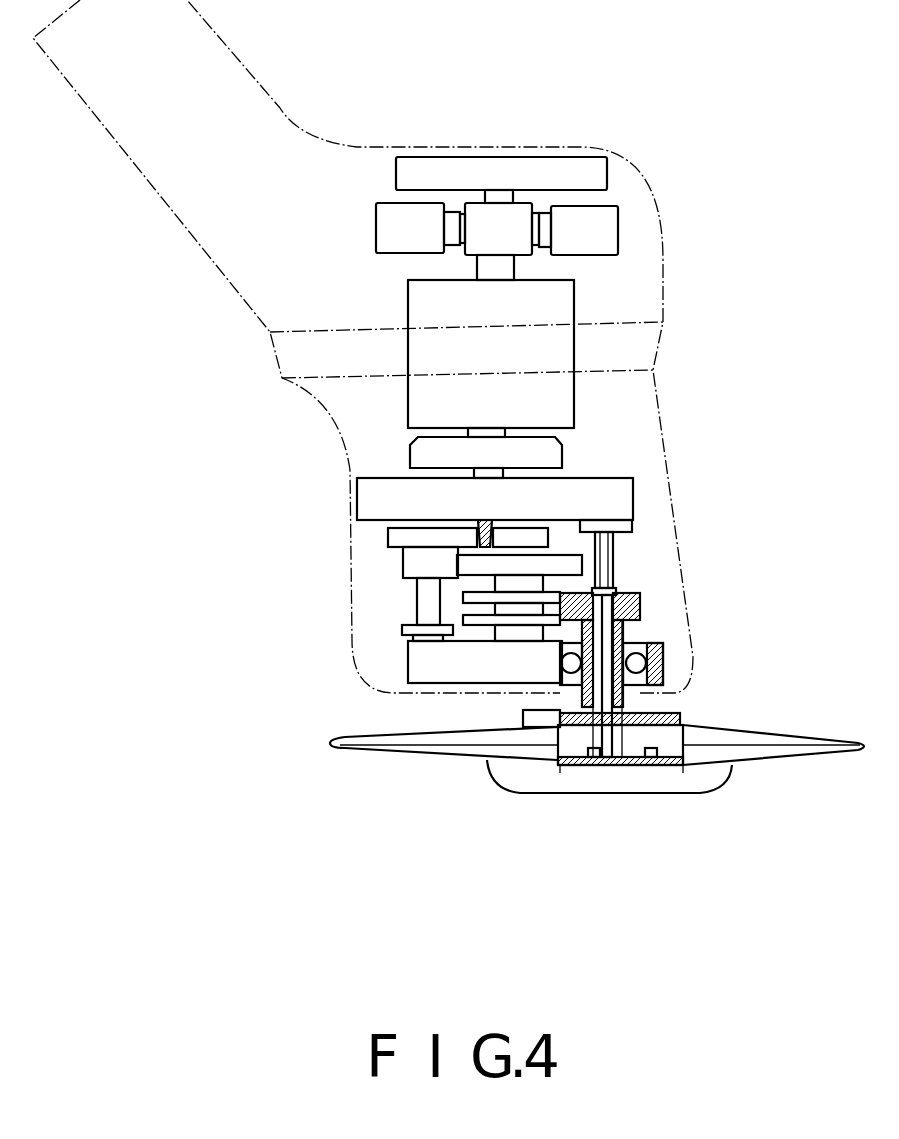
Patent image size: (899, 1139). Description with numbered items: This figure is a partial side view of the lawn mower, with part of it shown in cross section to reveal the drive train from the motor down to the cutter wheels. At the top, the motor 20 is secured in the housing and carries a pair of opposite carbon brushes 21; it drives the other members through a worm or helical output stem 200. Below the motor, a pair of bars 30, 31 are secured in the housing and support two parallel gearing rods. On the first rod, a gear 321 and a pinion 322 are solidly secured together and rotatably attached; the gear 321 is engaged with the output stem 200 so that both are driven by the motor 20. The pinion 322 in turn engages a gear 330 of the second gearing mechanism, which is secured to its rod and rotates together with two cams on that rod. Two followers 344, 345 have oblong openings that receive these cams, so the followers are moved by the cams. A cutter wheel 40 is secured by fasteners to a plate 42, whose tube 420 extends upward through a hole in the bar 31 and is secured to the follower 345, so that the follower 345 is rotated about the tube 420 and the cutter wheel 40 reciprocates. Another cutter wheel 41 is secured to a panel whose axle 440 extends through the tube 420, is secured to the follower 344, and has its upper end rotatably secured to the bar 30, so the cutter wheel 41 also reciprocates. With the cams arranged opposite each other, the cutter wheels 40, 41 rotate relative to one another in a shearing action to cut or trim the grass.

The carbon brushes 21 is at (386, 205).
The motor 20 is at (565, 303).
The helical output stem 200 is at (490, 530).
The bar 30 is at (368, 500).
The gear 321 is at (393, 533).
The pinion 322 is at (408, 563).
The gear 330 is at (582, 562).
The follower 344 is at (625, 595).
The follower 345 is at (637, 618).
The axle 440 is at (602, 635).
The bar 31 is at (658, 660).
The tube 420 is at (595, 690).
The plate 42 is at (668, 713).
The cutter wheel 40 is at (745, 740).
The cutter wheel 41 is at (467, 753).